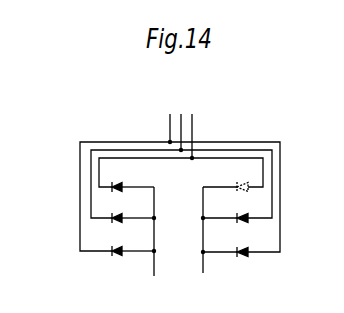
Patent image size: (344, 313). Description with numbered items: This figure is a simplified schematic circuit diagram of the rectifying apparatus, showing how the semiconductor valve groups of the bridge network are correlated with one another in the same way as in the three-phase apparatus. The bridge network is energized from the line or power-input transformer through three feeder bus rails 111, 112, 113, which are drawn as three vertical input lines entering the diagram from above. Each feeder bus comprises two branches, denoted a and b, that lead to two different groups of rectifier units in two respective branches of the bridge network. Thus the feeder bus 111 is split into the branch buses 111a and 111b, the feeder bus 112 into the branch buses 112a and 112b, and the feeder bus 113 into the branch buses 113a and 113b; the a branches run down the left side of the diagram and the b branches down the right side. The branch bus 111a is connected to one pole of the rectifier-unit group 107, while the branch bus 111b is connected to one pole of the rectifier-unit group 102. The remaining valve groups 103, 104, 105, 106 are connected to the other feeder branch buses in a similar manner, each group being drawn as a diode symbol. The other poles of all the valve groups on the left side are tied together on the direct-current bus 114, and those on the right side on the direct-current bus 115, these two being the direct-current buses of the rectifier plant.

The bus rail 111 is at (170, 114).
The bus rail 112 is at (173, 123).
The bus rail 113 is at (192, 124).
The branch bus 111a is at (97, 142).
The branch bus 111b is at (268, 143).
The branch bus 112a is at (91, 160).
The branch bus 112b is at (274, 158).
The branch bus 113a is at (80, 232).
The branch bus 113b is at (280, 235).
The rectifier-unit group 102 is at (245, 190).
The rectifier-unit group 103 is at (231, 228).
The rectifier-unit group 104 is at (232, 263).
The rectifier-unit group 105 is at (128, 261).
The rectifier-unit group 106 is at (128, 227).
The rectifier-unit group 107 is at (128, 197).
The direct-current bus 114 is at (157, 265).
The direct-current bus 115 is at (203, 268).